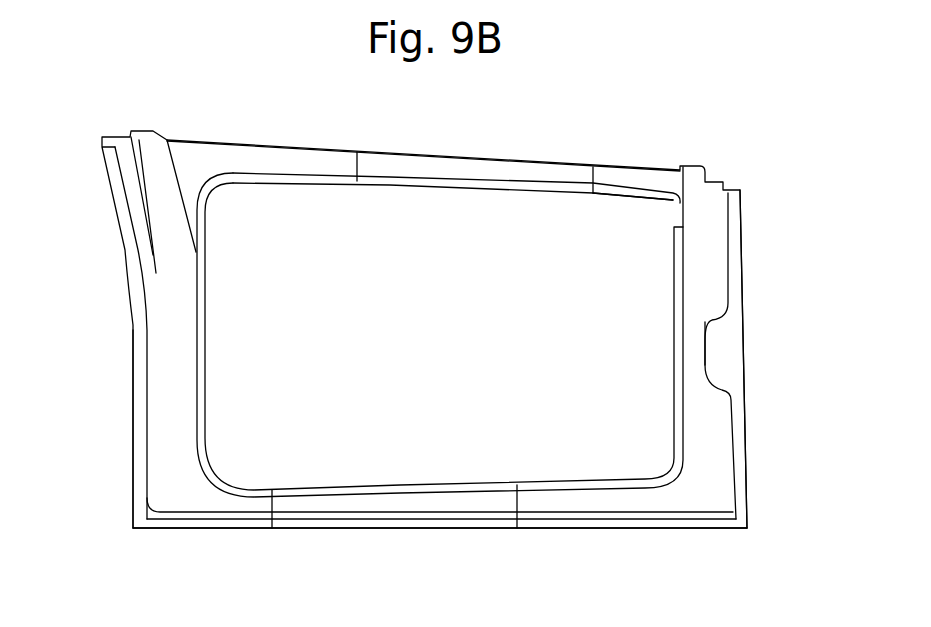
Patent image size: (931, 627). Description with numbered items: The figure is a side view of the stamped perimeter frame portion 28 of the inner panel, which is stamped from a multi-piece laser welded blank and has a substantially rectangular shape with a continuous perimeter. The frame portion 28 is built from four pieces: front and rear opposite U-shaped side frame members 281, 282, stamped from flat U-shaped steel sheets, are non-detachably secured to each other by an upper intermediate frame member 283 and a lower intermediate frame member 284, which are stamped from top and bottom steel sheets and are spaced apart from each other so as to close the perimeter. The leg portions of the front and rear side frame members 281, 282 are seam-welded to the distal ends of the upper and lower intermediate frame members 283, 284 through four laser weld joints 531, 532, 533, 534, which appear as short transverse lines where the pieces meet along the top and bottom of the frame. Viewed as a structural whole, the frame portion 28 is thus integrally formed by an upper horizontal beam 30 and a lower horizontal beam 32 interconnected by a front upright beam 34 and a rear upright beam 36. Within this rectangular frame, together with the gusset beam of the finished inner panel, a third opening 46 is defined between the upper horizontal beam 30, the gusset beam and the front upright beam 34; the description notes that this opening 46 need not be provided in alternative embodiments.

The perimeter frame portion 28 is at (764, 210).
The front U-shaped side frame member 281 is at (733, 263).
The rear U-shaped side frame member 282 is at (137, 325).
The upper intermediate frame member 283 is at (480, 166).
The lower intermediate frame member 284 is at (398, 529).
The upper horizontal beam 30 is at (302, 149).
The lower horizontal beam 32 is at (677, 530).
The front upright beam 34 is at (717, 413).
The rear upright beam 36 is at (132, 423).
The third opening 46 is at (648, 218).
The laser weld joint 531 is at (597, 183).
The laser weld joint 532 is at (518, 500).
The laser weld joint 533 is at (355, 166).
The laser weld joint 534 is at (272, 500).